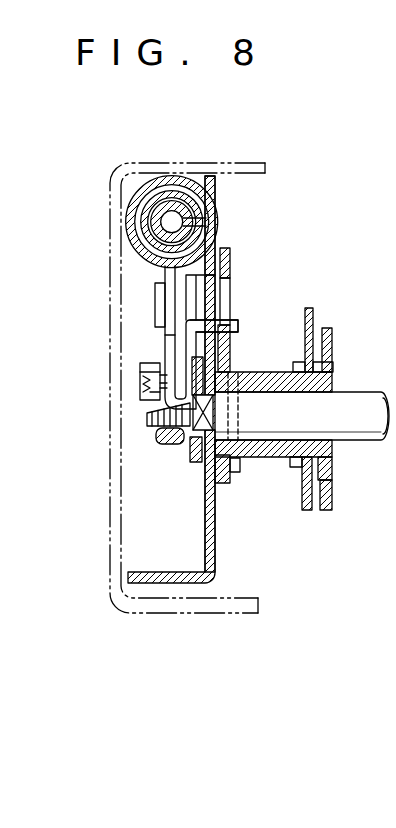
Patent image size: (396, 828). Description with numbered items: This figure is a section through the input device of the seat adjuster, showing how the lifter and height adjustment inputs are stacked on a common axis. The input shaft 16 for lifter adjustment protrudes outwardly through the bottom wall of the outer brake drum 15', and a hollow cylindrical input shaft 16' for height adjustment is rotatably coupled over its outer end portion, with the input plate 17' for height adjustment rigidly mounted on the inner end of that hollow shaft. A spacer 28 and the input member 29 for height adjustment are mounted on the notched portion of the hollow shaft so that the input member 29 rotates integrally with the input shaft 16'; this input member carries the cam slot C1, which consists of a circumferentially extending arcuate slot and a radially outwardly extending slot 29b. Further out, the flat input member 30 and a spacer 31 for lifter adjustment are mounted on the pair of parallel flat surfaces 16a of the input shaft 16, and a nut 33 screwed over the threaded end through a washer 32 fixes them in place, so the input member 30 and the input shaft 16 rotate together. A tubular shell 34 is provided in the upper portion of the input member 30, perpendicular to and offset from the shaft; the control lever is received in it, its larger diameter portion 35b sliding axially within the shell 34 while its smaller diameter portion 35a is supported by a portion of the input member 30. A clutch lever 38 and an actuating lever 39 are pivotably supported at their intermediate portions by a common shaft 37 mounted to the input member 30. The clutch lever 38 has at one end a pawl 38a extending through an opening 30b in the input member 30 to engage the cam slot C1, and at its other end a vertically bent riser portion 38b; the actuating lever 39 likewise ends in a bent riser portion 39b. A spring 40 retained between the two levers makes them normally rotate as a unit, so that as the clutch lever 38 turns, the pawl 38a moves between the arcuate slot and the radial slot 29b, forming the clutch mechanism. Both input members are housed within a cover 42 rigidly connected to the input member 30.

The brake drum 15' is at (290, 500).
The input shaft 16 is at (302, 390).
The hollow cylindrical input shaft 16' is at (296, 460).
The parallel flat surfaces 16a is at (242, 386).
The input plate 17' is at (348, 496).
The spacer 28 is at (233, 475).
The input member 29 is at (217, 497).
The slot 29b is at (232, 277).
The flat input member 30 is at (212, 571).
The opening 30b is at (210, 298).
The spacer 31 is at (193, 462).
The washer 32 is at (185, 445).
The nut 33 is at (152, 440).
The tubular shell 34 is at (138, 181).
The smaller diameter portion 35a is at (218, 222).
The larger diameter portion 35b is at (218, 190).
The common shaft 37 is at (155, 313).
The clutch lever 38 is at (163, 292).
The pawl 38a is at (238, 325).
The riser portion 38b is at (140, 370).
The actuating lever 39 is at (163, 342).
The riser portion 39b is at (146, 393).
The spring 40 is at (142, 383).
The cover 42 is at (109, 535).
The cam slot C1 is at (247, 281).